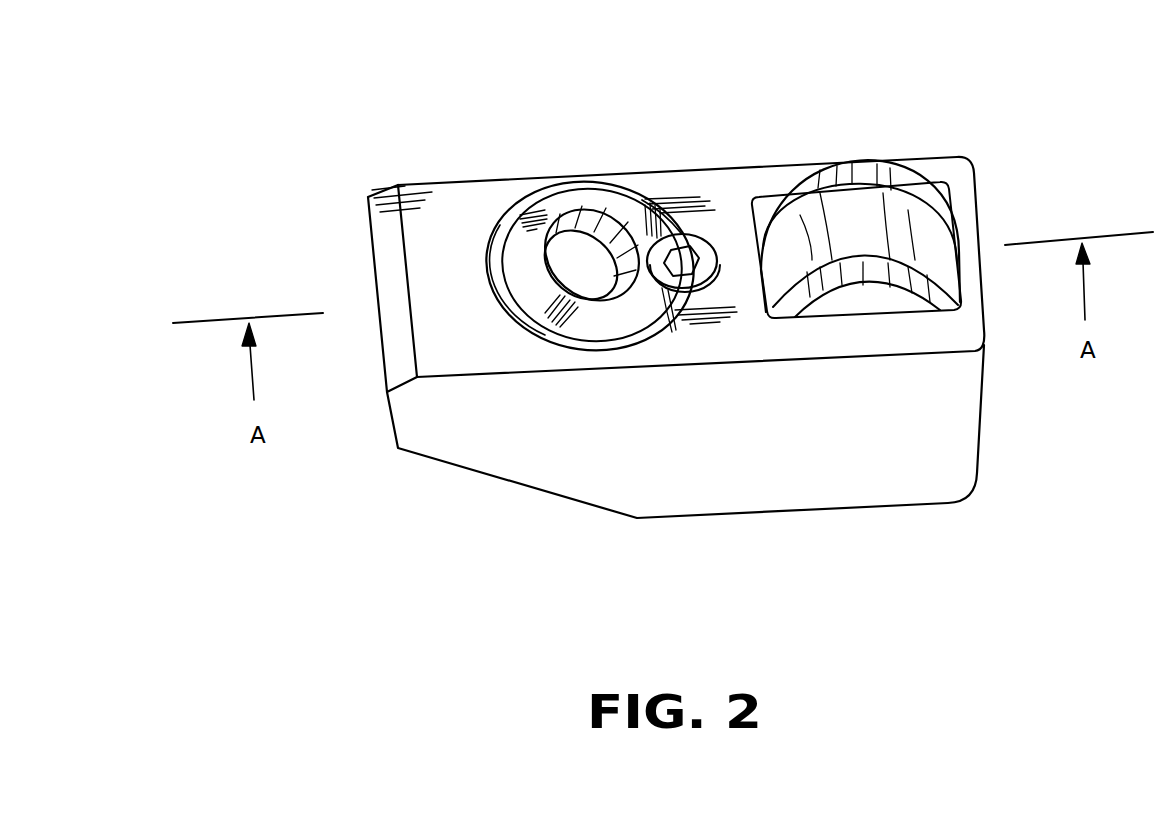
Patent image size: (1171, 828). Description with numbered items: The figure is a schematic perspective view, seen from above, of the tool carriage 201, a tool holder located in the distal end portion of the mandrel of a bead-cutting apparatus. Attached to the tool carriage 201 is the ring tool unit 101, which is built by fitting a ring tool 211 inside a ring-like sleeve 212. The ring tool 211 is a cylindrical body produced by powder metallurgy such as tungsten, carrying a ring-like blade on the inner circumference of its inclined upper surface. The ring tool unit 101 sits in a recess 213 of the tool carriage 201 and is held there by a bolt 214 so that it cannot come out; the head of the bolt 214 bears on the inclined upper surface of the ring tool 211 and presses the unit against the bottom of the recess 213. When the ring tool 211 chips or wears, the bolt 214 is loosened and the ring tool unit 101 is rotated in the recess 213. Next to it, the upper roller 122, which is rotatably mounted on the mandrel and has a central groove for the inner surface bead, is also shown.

The ring tool unit 101 is at (589, 208).
The upper roller 122 is at (853, 175).
The tool carriage 201 is at (697, 447).
The ring tool 211 is at (560, 192).
The ring-like sleeve 212 is at (521, 190).
The recess 213 is at (633, 204).
The bolt 214 is at (693, 235).